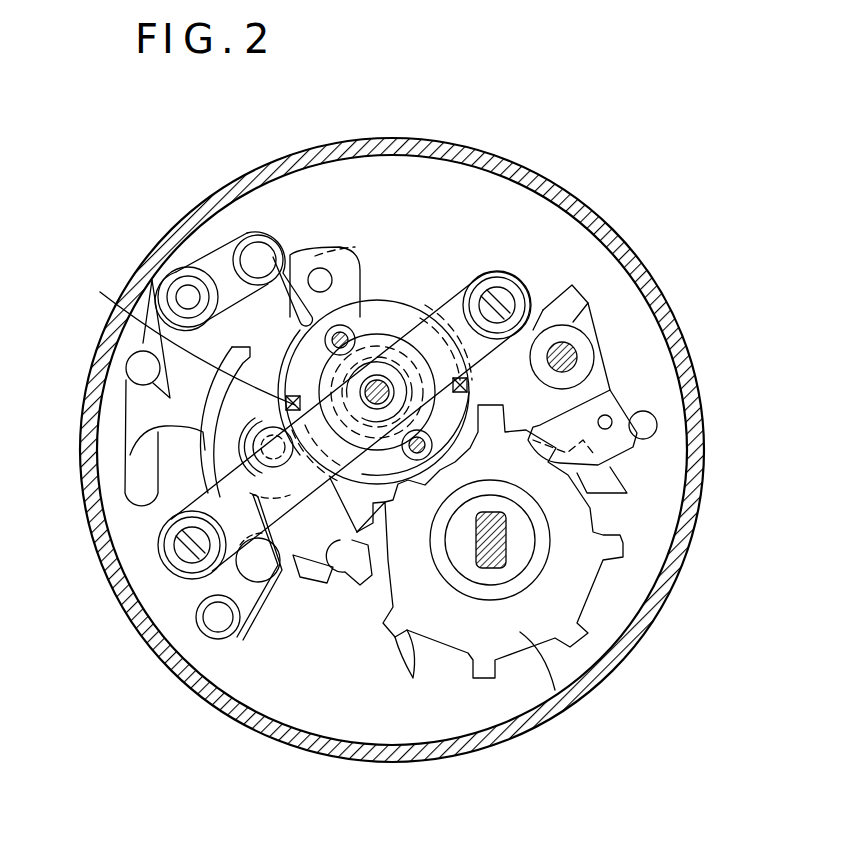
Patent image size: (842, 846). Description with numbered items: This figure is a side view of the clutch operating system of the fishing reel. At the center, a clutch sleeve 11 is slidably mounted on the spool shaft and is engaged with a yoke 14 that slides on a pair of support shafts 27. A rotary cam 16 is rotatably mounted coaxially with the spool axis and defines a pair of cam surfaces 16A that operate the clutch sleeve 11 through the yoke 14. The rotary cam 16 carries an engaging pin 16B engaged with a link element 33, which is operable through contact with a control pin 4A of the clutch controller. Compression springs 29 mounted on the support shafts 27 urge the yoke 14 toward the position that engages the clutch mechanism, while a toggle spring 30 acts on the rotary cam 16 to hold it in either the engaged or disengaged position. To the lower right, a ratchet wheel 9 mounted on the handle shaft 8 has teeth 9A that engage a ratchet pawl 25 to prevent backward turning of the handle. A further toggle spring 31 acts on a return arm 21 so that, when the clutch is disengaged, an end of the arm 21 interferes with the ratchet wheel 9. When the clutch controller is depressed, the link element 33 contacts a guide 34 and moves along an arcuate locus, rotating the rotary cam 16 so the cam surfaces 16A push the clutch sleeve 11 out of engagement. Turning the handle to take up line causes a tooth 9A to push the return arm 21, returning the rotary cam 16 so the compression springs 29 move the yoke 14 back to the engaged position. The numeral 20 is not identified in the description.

The control pin 4A is at (143, 368).
The handle shaft 8 is at (522, 620).
The ratchet wheel 9 is at (528, 665).
The teeth 9A is at (413, 678).
The clutch sleeve 11 is at (392, 333).
The yoke 14 is at (447, 305).
The rotary cam 16 is at (382, 310).
The cam surfaces 16A is at (493, 446).
The engaging pin 16B is at (320, 268).
The boss plate 20 is at (375, 430).
The return arm 21 is at (335, 585).
The ratchet pawl 25 is at (612, 470).
The support shafts 27 is at (486, 288).
The compression springs 29 is at (505, 300).
The toggle spring 30 is at (262, 232).
The toggle spring 31 is at (262, 582).
The link element 33 is at (243, 310).
The guide 34 is at (165, 268).